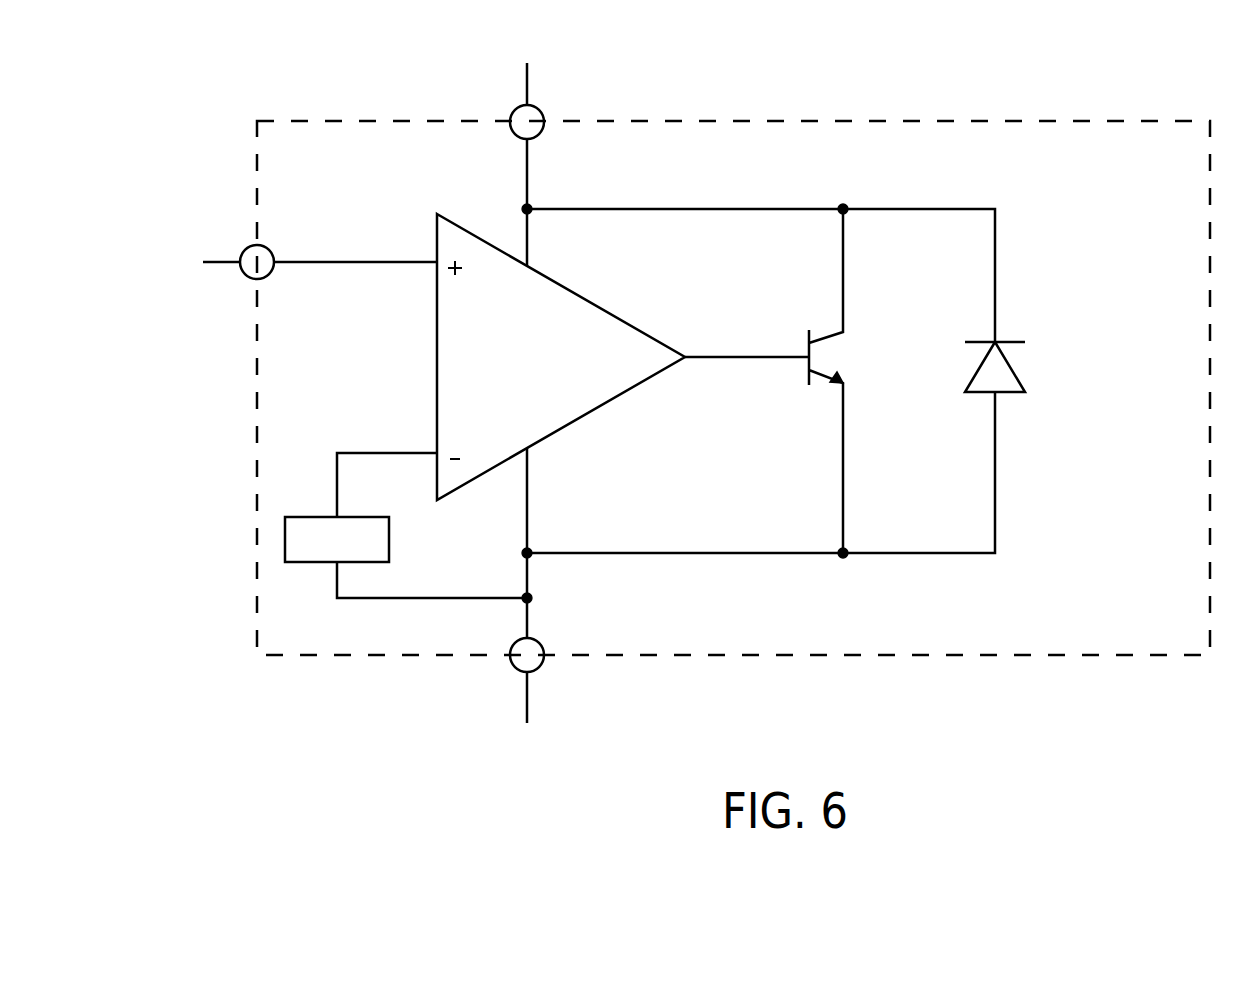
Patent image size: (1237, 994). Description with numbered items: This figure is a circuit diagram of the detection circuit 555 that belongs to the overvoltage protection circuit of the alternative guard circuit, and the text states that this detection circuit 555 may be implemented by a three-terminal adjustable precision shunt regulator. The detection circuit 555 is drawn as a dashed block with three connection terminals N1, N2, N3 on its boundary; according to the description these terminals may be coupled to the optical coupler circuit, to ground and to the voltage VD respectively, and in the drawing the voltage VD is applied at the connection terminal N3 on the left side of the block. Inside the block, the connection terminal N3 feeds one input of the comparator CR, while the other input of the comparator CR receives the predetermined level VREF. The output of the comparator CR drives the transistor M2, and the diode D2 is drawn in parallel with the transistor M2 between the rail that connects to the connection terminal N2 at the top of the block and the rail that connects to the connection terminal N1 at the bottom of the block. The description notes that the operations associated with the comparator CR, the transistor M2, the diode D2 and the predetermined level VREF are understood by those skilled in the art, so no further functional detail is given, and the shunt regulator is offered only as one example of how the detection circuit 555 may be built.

The detection circuit 555 is at (1153, 120).
The connection terminal N1 is at (545, 680).
The connection terminal N2 is at (541, 136).
The connection terminal N3 is at (243, 245).
The voltage VD is at (299, 261).
The comparator CR is at (563, 285).
The predetermined level VREF is at (406, 525).
The transistor M2 is at (845, 381).
The diode D2 is at (978, 367).